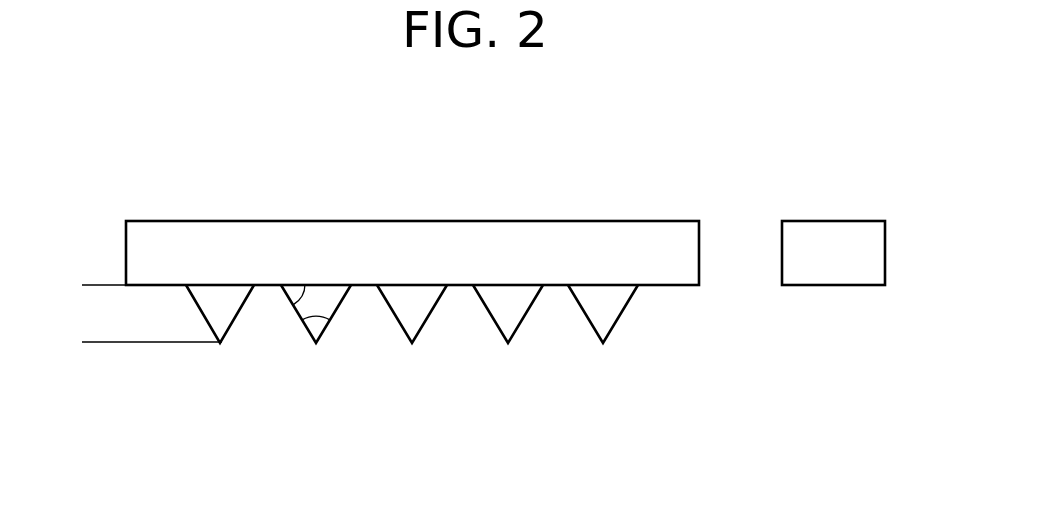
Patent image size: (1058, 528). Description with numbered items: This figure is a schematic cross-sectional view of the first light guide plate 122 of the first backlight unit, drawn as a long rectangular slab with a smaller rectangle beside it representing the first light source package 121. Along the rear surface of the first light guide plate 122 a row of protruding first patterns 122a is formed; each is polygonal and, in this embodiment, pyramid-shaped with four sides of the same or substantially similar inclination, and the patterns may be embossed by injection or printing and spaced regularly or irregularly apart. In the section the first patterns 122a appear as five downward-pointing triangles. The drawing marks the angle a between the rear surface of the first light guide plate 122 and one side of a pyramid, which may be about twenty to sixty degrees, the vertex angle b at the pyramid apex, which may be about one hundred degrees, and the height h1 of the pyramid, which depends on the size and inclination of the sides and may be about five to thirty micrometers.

The first light guide plate 122 is at (624, 192).
The first patterns 122a is at (633, 328).
The first light source package 121 is at (833, 221).
The height of the symmetric pyramid h1 is at (97, 285).
The angle between the rear surface and one side of the symmetric pyramid a is at (298, 307).
The vertex angle of the symmetric pyramid b is at (330, 322).